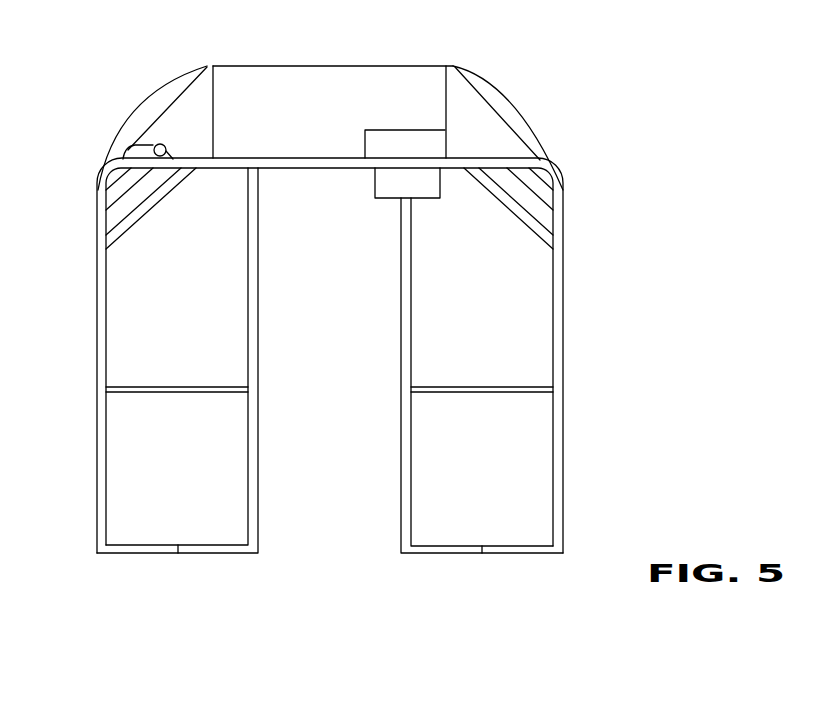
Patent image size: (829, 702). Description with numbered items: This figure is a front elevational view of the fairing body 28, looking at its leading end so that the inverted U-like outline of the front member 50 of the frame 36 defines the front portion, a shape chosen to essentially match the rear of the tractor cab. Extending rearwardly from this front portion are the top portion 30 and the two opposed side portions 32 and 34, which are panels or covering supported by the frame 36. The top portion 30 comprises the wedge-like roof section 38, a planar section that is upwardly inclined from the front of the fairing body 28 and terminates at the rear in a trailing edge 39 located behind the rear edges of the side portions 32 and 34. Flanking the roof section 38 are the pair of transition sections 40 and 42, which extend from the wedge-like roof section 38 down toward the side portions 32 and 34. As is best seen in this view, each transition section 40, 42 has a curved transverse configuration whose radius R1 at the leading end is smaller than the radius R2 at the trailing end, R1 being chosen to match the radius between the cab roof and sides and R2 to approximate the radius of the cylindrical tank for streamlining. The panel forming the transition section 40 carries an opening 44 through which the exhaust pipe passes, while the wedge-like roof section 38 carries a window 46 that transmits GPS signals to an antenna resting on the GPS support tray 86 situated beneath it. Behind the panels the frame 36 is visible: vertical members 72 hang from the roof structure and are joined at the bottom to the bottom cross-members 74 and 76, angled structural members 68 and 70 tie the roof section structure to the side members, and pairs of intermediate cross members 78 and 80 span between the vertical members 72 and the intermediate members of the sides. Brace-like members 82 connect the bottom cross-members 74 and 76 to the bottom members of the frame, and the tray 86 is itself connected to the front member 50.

The fairing body 28 is at (668, 190).
The top portion 30 is at (495, 62).
The side portion 32 is at (95, 343).
The side portion 34 is at (563, 342).
The frame 36 is at (198, 572).
The wedge-like roof section 38 is at (328, 82).
The trailing edge 39 is at (400, 65).
The transition section 40 is at (162, 105).
The transition section 42 is at (518, 128).
The opening 44 is at (165, 152).
The window 46 is at (388, 138).
The front member 50 is at (557, 487).
The angled structural member 68 is at (140, 223).
The angled structural member 70 is at (140, 178).
The vertical members 72 is at (405, 420).
The bottom cross-member 74 is at (218, 547).
The bottom cross-member 76 is at (508, 552).
The intermediate cross member 78 is at (183, 383).
The intermediate cross member 80 is at (481, 387).
The brace-like members 82 is at (142, 547).
The GPS support tray 86 is at (385, 193).
The radius at leading end of transition section R1 is at (549, 171).
The radius at trailing end of transition section R2 is at (495, 95).